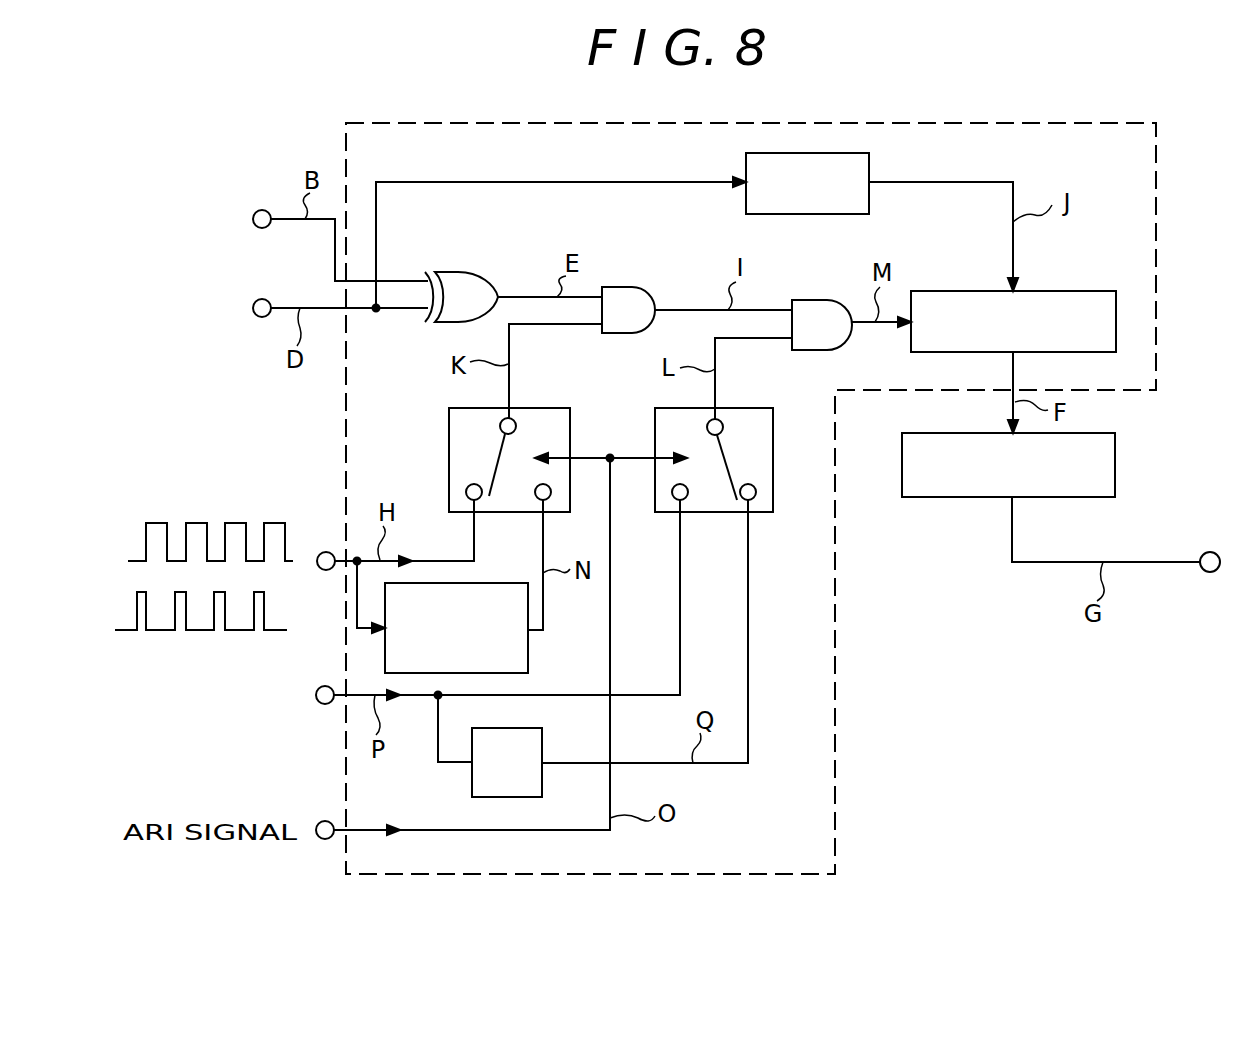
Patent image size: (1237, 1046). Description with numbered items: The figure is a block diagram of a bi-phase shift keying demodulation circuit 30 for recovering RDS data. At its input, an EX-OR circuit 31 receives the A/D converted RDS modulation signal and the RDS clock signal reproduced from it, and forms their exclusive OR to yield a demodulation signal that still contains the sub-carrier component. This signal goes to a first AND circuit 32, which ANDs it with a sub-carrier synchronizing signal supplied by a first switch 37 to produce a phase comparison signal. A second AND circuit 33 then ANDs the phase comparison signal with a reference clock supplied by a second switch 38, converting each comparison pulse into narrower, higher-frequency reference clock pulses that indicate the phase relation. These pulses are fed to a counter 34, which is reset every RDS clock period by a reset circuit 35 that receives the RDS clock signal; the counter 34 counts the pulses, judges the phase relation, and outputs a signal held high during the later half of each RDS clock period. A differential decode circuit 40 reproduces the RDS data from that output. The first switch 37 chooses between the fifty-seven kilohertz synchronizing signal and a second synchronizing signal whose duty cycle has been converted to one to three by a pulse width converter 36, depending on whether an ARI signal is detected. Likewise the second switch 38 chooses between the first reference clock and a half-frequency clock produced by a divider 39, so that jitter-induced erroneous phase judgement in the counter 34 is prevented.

The bi-phase shift keying demodulation circuit 30 is at (835, 722).
The EX-OR circuit 31 is at (485, 272).
The first AND circuit 32 is at (630, 287).
The second AND circuit 33 is at (822, 300).
The counter 34 is at (1070, 291).
The reset circuit 35 is at (869, 162).
The pulse width converter 36 is at (528, 650).
The first switch 37 is at (545, 408).
The second switch 38 is at (745, 408).
The divider 39 is at (542, 740).
The differential decode circuit 40 is at (1115, 475).